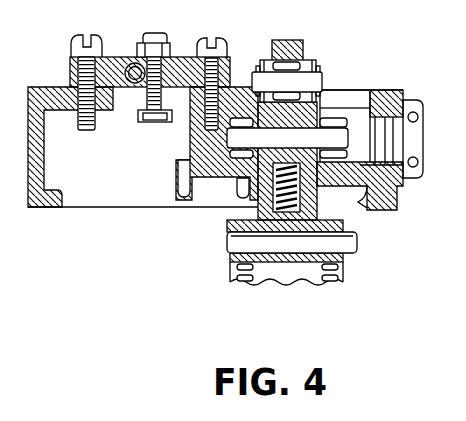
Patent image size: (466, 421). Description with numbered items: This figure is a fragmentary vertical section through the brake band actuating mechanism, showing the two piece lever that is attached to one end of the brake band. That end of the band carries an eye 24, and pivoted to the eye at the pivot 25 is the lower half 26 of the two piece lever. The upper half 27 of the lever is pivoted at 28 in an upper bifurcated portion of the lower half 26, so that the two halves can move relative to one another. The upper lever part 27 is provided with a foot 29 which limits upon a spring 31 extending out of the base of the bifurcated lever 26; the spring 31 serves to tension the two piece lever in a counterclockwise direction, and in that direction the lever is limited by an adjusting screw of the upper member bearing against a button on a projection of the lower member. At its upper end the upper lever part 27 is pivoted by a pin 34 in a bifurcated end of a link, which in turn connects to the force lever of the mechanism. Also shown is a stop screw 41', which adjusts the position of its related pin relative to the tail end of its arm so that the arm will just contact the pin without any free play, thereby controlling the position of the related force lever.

The eye 24 is at (230, 258).
The pivot 25 is at (358, 243).
The lower half of two piece lever 26 is at (255, 214).
The upper half of two piece lever 27 is at (305, 44).
The pivot 28 is at (287, 138).
The foot 29 is at (257, 167).
The spring 31 is at (317, 197).
The pin 34 is at (321, 82).
The stop screw 41' is at (125, 102).